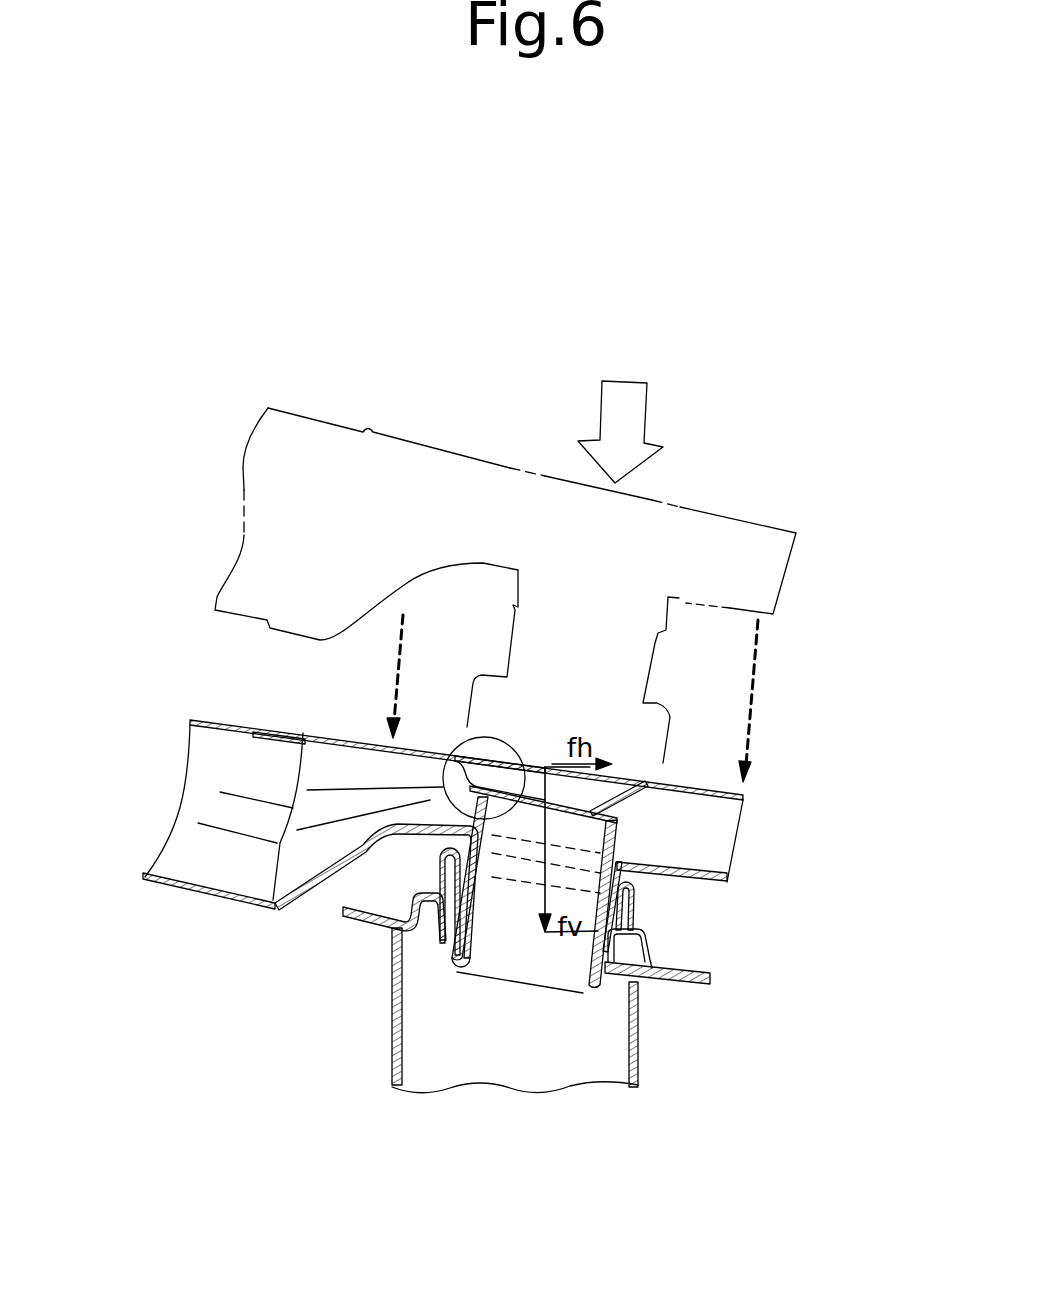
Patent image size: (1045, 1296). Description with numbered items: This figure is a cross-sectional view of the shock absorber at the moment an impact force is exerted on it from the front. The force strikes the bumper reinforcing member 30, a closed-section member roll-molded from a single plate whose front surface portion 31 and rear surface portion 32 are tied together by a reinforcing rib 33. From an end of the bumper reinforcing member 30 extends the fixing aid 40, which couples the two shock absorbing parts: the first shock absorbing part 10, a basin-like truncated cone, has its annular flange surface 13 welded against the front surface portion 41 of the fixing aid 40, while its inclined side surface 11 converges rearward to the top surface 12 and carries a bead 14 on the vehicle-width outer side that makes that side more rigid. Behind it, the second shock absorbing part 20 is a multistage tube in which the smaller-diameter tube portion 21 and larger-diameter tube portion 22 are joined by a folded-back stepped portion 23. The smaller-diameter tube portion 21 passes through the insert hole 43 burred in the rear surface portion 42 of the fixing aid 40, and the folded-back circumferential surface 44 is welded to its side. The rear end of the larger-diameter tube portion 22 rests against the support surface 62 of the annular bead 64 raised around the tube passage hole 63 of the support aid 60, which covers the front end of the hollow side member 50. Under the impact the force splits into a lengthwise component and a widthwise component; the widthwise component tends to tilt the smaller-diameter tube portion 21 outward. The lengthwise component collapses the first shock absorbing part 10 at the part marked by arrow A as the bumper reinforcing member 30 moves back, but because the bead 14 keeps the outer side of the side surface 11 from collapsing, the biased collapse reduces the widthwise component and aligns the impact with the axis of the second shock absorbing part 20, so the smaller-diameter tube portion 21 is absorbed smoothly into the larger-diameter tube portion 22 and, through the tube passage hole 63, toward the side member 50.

The first shock absorbing part 10 is at (740, 312).
The side surface 11 is at (533, 780).
The top surface 12 is at (508, 780).
The annular flange surface 13 is at (660, 780).
The bead 14 is at (620, 787).
The second shock absorbing part 20 is at (812, 945).
The smaller-diameter tube portion 21 is at (565, 952).
The larger-diameter tube portion 22 is at (660, 985).
The stepped portion 23 is at (648, 940).
The bumper reinforcing member 30 is at (110, 735).
The front surface portion 31 is at (213, 727).
The rear surface portion 32 is at (193, 877).
The reinforcing rib 33 is at (207, 790).
The fixing aid 40 is at (832, 800).
The front surface portion 41 is at (722, 799).
The rear surface portion 42 is at (695, 860).
The insert hole 43 is at (620, 872).
The circumferential surface 44 is at (622, 884).
The side member 50 is at (533, 1060).
The support aid 60 is at (306, 950).
The support surface 62 is at (430, 905).
The tube passage hole 63 is at (447, 942).
The annular bead 64 is at (446, 915).
The collapsed part A is at (440, 810).